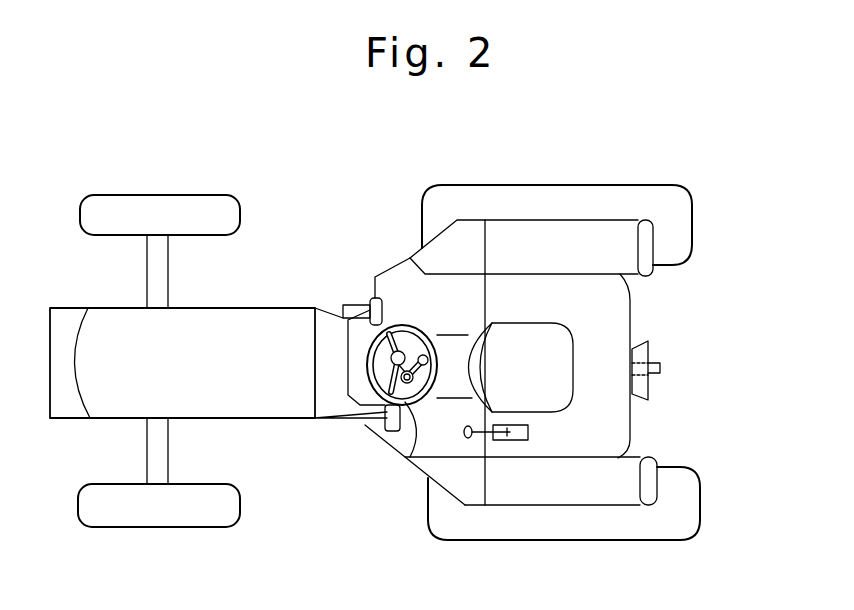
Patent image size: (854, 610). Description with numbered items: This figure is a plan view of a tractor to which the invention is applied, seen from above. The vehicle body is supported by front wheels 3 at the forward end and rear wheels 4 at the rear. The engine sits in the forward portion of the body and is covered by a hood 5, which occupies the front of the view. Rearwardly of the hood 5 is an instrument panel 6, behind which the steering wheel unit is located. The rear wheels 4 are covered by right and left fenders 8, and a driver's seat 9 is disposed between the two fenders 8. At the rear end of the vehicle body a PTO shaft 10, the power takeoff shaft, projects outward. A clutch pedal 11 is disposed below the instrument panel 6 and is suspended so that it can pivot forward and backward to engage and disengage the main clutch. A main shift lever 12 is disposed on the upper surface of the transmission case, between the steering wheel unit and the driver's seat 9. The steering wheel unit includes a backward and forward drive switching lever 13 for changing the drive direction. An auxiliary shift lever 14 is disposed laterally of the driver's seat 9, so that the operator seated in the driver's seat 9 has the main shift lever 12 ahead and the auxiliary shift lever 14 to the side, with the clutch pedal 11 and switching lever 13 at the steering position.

The front wheels 3 is at (213, 513).
The rear wheels 4 is at (700, 510).
The hood 5 is at (240, 310).
The instrument panel 6 is at (362, 335).
The fenders 8 is at (563, 236).
The driver's seat 9 is at (567, 352).
The PTO shaft 10 is at (663, 370).
The clutch pedal 11 is at (378, 430).
The main shift lever 12 is at (407, 327).
The backward and forward drive switching lever 13 is at (415, 460).
The auxiliary shift lever 14 is at (468, 440).